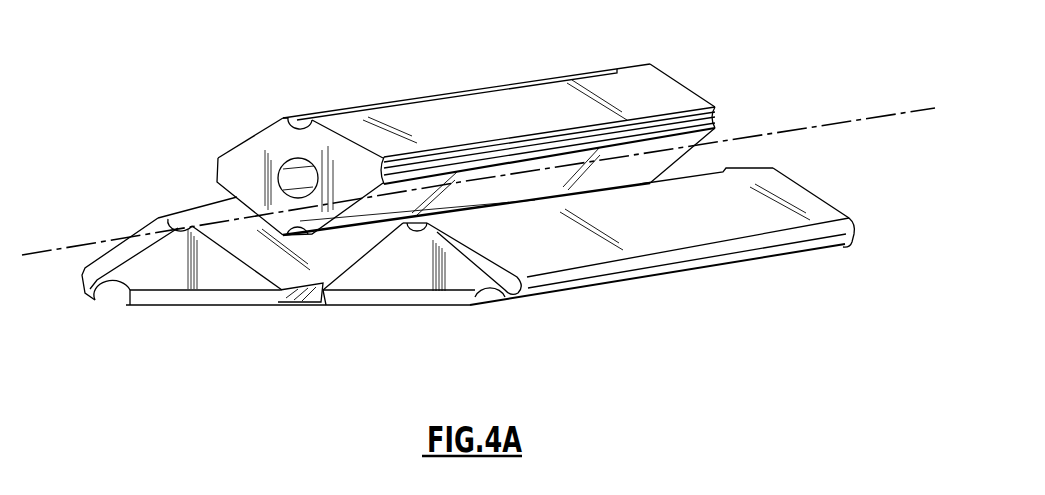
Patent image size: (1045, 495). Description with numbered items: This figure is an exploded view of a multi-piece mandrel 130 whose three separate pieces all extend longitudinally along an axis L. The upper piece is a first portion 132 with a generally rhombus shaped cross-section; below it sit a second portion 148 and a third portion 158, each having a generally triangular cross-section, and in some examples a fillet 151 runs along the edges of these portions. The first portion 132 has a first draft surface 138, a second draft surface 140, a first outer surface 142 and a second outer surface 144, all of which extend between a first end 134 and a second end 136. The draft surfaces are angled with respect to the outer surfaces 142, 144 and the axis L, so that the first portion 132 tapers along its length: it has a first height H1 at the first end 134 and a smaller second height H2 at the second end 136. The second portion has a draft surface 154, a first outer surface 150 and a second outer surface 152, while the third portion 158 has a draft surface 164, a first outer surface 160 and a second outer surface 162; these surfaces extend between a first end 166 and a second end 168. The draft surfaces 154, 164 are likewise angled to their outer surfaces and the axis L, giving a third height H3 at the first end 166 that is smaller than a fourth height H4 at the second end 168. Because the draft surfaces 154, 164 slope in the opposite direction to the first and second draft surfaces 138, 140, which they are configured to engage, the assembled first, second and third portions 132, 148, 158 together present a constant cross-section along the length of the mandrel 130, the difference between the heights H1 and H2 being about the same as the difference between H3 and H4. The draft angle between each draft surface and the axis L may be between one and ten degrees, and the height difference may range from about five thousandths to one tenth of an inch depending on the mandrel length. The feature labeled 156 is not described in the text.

The multi-piece mandrel 130 is at (172, 96).
The first portion 132 is at (407, 122).
The first end 134 is at (275, 147).
The second end 136 is at (698, 92).
The first draft surface 138 is at (698, 128).
The second draft surface 140 is at (220, 193).
The first outer surface 142 is at (527, 97).
The second outer surface 144 is at (238, 140).
The second portion 148 is at (177, 277).
The first outer surface 150 is at (145, 226).
The fillet 151 is at (542, 260).
The second outer surface 152 is at (205, 306).
The draft surface 154 is at (278, 255).
The end notch 156 is at (127, 276).
The third portion 158 is at (560, 272).
The first outer surface 160 is at (430, 310).
The second outer surface 162 is at (665, 248).
The draft surface 164 is at (350, 247).
The first end 166 is at (414, 284).
The second end 168 is at (828, 204).
The first height H1 is at (284, 235).
The second height H2 is at (650, 183).
The third height H3 is at (403, 223).
The fourth height H4 is at (727, 173).
The axis L is at (848, 122).